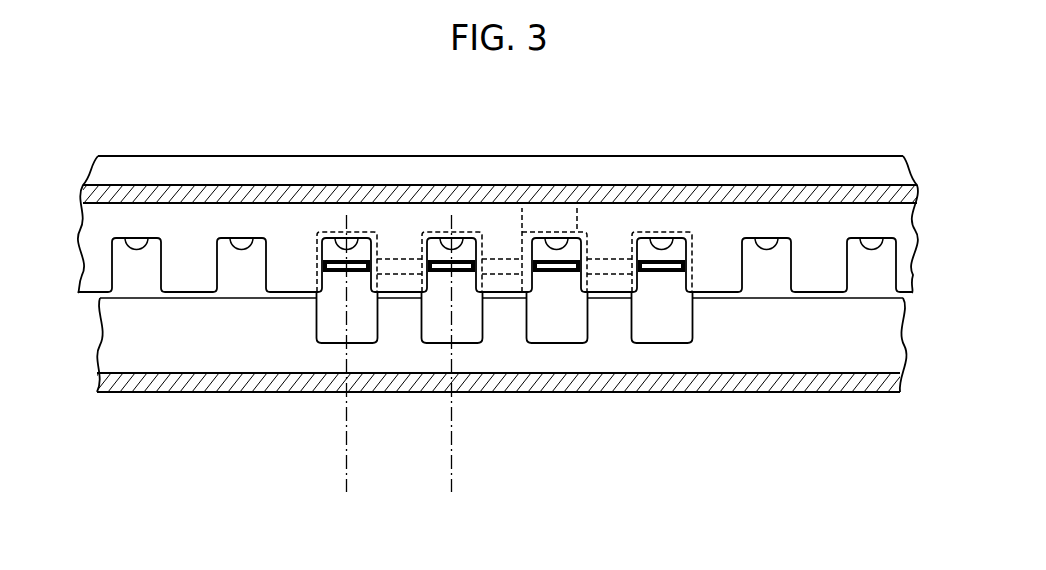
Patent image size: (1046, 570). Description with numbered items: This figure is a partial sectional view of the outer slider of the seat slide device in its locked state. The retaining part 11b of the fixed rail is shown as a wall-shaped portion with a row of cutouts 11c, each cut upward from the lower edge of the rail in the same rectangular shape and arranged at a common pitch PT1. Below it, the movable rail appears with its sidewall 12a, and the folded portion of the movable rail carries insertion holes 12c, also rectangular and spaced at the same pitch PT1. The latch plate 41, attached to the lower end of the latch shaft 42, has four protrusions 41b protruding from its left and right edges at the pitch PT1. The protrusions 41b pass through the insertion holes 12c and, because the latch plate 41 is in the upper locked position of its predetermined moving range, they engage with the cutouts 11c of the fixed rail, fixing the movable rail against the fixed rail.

The retaining part 11b is at (195, 228).
The cutout 11c is at (156, 243).
The sidewall 12a is at (240, 293).
The insertion hole 12c is at (377, 301).
The latch plate 41 is at (452, 278).
The protrusion 41b is at (340, 268).
The latch shaft 42 is at (578, 220).
The pitch PT1 is at (452, 487).